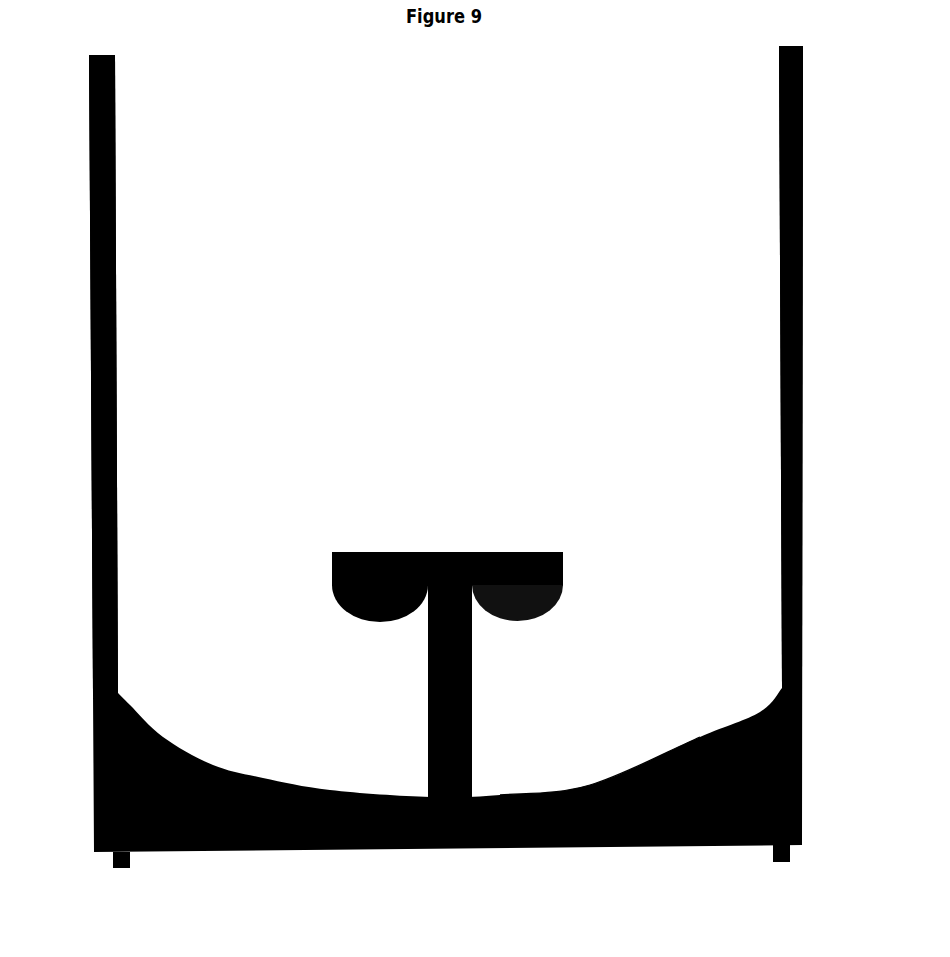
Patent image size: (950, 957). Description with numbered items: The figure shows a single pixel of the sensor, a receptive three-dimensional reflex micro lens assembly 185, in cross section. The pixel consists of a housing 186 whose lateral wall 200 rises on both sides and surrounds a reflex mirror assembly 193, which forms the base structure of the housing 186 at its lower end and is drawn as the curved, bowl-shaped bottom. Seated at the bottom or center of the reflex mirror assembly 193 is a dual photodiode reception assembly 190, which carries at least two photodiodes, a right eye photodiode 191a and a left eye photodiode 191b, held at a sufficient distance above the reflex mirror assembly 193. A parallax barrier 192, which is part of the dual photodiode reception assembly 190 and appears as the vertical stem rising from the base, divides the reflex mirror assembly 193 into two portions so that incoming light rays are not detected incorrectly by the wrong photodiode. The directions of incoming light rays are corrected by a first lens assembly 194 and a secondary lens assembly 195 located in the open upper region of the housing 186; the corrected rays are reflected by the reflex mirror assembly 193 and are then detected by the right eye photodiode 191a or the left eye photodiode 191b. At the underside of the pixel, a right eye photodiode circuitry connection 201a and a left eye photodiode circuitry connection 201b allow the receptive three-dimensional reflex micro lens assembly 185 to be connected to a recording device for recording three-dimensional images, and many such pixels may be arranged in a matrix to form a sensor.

The receptive 3D-RML assembly 185 is at (427, 485).
The housing 186 is at (78, 374).
The dual photodiode reception assembly 190 is at (447, 548).
The right eye photodiode 191a is at (563, 584).
The left eye photodiode 191b is at (332, 590).
The parallax barrier 192 is at (472, 692).
The reflex mirror assembly 193 is at (593, 777).
The first lens assembly 194 is at (548, 275).
The secondary lens assembly 195 is at (631, 118).
The lateral wall 200 is at (470, 367).
The right eye photodiode circuitry connection 201a is at (775, 862).
The left eye photodiode circuitry connection 201b is at (130, 865).